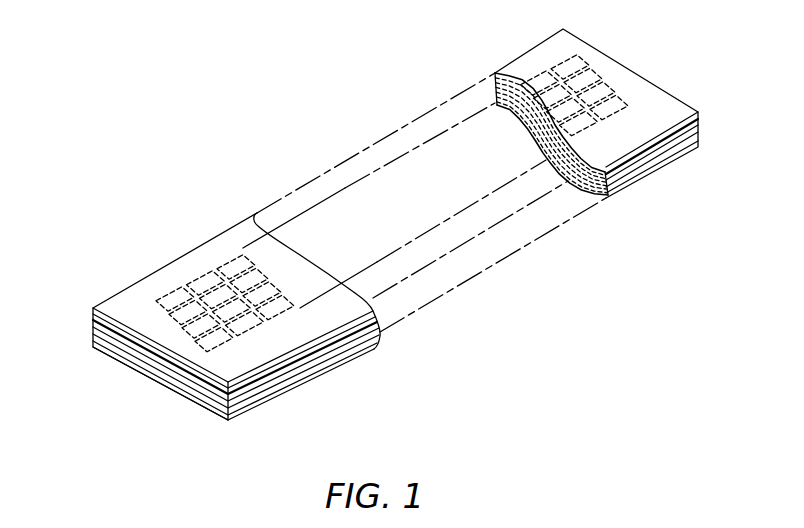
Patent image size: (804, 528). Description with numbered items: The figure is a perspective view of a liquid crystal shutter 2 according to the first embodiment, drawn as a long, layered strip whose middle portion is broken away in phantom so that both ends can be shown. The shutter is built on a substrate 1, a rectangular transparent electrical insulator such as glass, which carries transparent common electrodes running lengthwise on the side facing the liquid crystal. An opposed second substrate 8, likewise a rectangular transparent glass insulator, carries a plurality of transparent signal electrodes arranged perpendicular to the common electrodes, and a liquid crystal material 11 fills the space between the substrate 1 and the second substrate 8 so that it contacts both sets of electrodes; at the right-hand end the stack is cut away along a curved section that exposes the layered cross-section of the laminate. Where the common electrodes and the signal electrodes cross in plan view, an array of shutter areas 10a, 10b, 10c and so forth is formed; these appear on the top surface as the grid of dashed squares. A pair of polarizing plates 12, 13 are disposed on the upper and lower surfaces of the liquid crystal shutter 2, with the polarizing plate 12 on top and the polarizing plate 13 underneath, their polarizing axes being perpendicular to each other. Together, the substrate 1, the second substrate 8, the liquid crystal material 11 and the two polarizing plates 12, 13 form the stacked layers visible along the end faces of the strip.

The substrate 1 is at (153, 372).
The liquid crystal shutter 2 is at (94, 310).
The second substrate 8 is at (203, 383).
The shutter area 10a is at (578, 63).
The shutter area 10b is at (603, 84).
The shutter area 10c is at (622, 98).
The liquid crystal material 11 is at (597, 187).
The polarizing plate 12 is at (260, 360).
The polarizing plate 13 is at (240, 415).